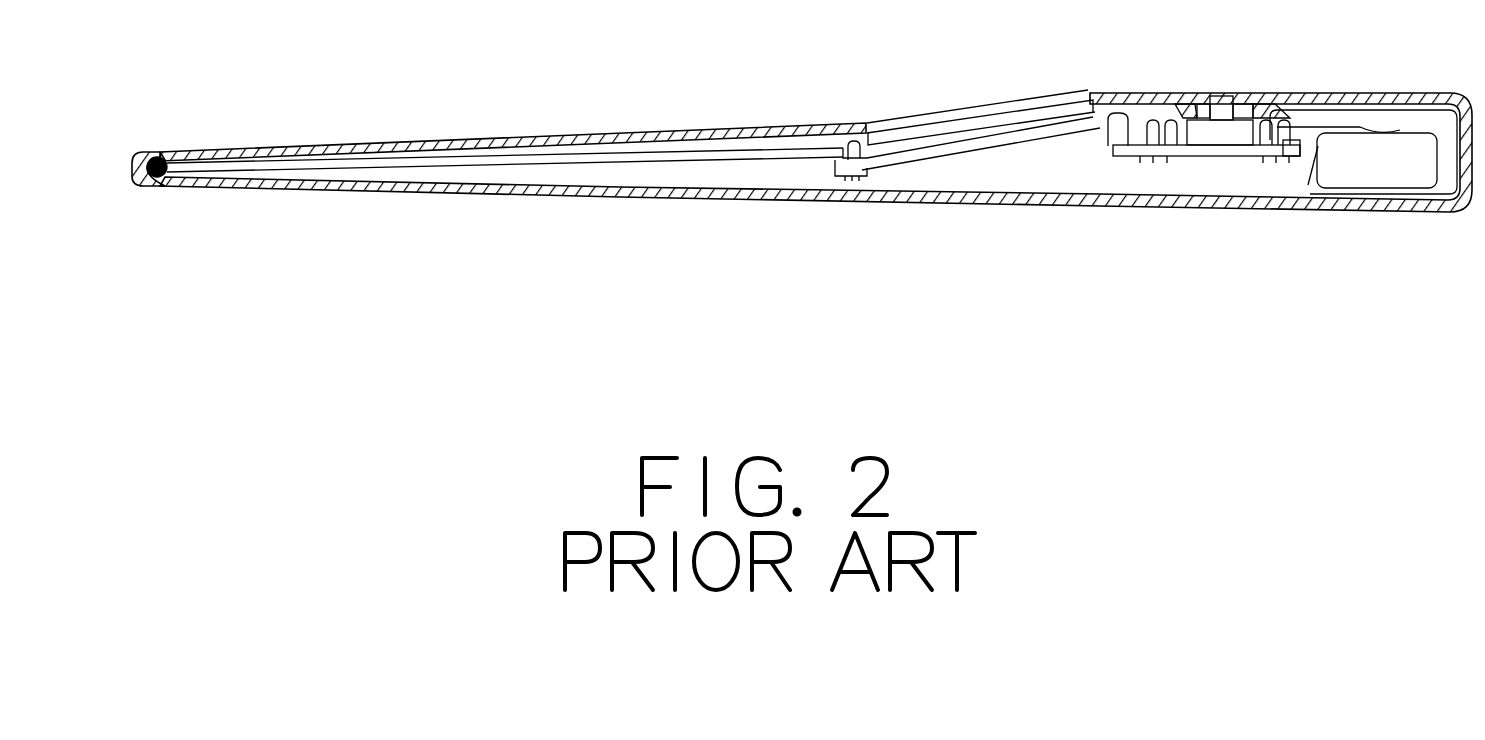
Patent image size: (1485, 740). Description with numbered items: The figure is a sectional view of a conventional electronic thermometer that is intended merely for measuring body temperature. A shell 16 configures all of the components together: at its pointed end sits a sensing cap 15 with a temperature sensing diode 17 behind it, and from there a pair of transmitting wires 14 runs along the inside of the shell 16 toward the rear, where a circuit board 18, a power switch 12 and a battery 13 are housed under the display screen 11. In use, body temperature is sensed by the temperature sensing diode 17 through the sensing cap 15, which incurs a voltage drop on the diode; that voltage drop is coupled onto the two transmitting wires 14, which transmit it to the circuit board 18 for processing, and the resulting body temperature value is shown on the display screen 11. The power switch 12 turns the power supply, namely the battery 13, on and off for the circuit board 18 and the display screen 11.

The display screen 11 is at (978, 128).
The power switch 12 is at (1224, 100).
The battery 13 is at (1393, 182).
The transmitting wires 14 is at (515, 152).
The sensing cap 15 is at (152, 159).
The shell 16 is at (671, 197).
The temperature sensing diode 17 is at (164, 185).
The circuit board 18 is at (1217, 156).